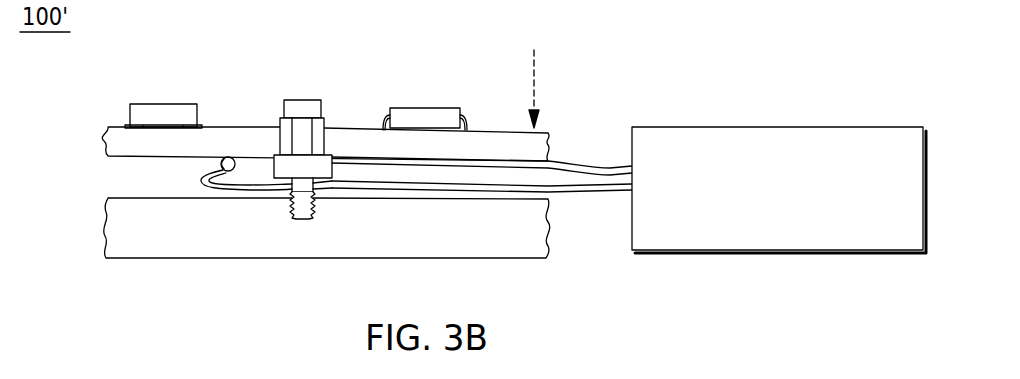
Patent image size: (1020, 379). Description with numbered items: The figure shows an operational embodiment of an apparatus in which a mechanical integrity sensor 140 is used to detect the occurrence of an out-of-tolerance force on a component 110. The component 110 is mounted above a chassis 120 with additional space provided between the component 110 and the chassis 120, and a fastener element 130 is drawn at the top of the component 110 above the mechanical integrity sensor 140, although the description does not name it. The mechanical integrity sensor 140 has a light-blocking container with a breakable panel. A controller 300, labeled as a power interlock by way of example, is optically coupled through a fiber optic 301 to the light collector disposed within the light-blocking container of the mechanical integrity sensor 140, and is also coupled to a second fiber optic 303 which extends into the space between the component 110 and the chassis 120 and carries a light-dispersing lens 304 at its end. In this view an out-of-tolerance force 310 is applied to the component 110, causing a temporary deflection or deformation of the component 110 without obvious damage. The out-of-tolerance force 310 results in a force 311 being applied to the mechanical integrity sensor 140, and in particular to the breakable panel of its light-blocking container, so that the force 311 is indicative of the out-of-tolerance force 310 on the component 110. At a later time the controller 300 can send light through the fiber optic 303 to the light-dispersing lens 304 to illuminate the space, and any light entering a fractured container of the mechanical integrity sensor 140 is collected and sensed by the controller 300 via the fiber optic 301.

The component 110 is at (102, 141).
The chassis 120 is at (104, 229).
The nut 130 is at (303, 98).
The mechanical integrity sensor 140 is at (285, 164).
The controller 300 is at (825, 127).
The fiber optic 301 is at (587, 164).
The fiber optic 303 is at (593, 192).
The light-dispersing lens 304 is at (230, 157).
The out-of-tolerance force 310 is at (533, 49).
The force 311 is at (330, 153).